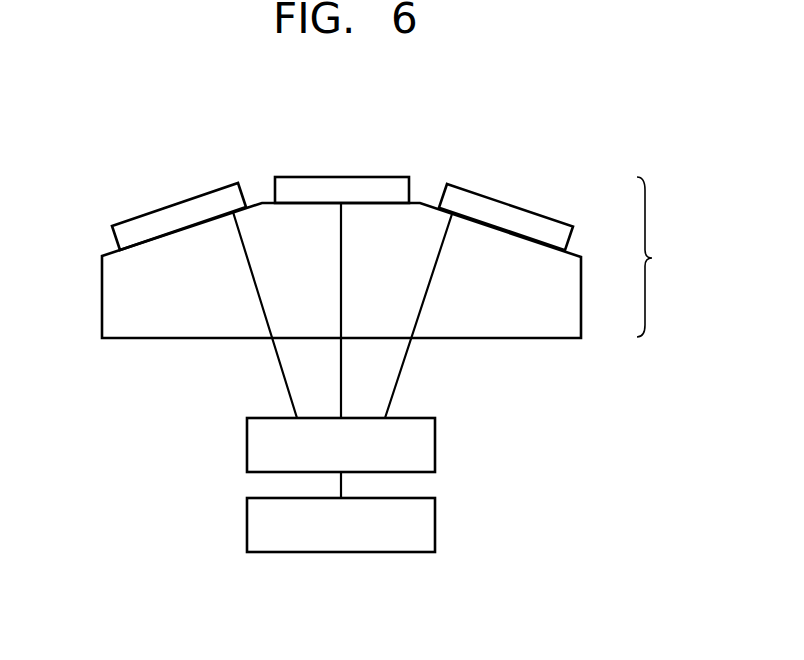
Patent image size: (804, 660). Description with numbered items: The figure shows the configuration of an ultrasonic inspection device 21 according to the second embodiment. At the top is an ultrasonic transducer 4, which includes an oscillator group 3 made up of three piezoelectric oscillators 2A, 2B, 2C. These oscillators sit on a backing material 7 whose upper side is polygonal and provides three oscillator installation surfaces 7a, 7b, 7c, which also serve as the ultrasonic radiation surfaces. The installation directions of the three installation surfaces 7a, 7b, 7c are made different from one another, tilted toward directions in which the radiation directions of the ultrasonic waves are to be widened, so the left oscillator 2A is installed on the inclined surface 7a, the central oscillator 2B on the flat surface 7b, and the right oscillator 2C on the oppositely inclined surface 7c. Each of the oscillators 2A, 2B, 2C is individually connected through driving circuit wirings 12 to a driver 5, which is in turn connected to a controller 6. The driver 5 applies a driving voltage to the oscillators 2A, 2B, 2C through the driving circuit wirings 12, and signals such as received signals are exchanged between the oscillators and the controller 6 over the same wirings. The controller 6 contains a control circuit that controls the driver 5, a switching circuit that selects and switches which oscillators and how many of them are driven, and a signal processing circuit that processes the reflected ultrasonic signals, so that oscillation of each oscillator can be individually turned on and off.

The ultrasonic inspection device 21 is at (576, 110).
The oscillator 2A is at (168, 223).
The oscillator 2B is at (343, 192).
The oscillator 2C is at (517, 222).
The oscillator group 3 is at (569, 180).
The ultrasonic transducer 4 is at (656, 257).
The backing material 7 is at (102, 291).
The installation surface 7a is at (110, 250).
The installation surface 7b is at (421, 204).
The installation surface 7c is at (577, 250).
The driving circuit wirings 12 is at (397, 387).
The driver 5 is at (435, 446).
The controller 6 is at (435, 525).